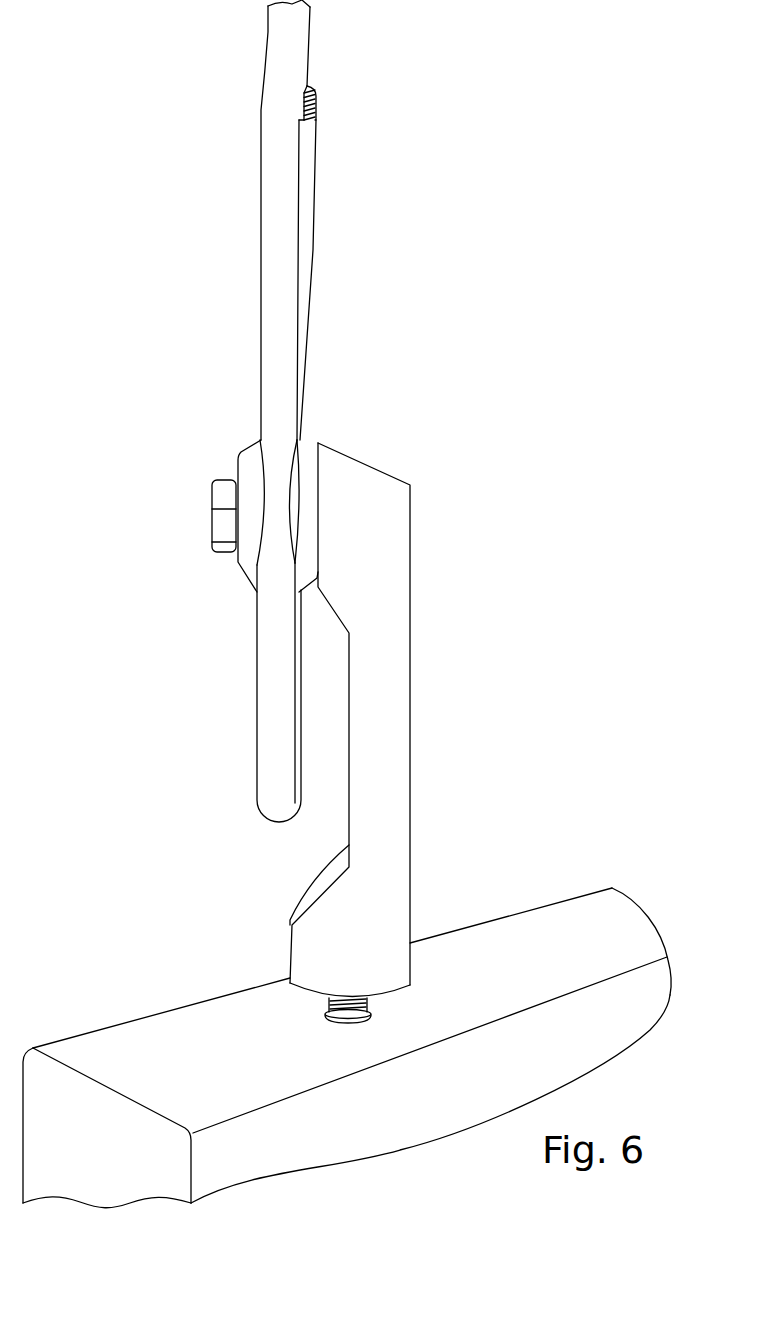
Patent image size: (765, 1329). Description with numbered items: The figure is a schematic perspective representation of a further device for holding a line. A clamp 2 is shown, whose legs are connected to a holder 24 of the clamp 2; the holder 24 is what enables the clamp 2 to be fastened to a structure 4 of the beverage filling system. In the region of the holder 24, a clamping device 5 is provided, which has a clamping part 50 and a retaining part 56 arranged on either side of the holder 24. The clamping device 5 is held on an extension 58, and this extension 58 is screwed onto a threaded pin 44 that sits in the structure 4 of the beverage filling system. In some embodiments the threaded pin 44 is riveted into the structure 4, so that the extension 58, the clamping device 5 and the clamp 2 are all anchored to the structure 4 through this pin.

The clamp 2 is at (280, 258).
The structure 4 is at (150, 1042).
The clamping device 5 is at (168, 516).
The holder 24 is at (278, 680).
The threaded pin 44 is at (370, 1007).
The clamping part 50 is at (247, 555).
The retaining part 56 is at (304, 462).
The extension 58 is at (395, 557).